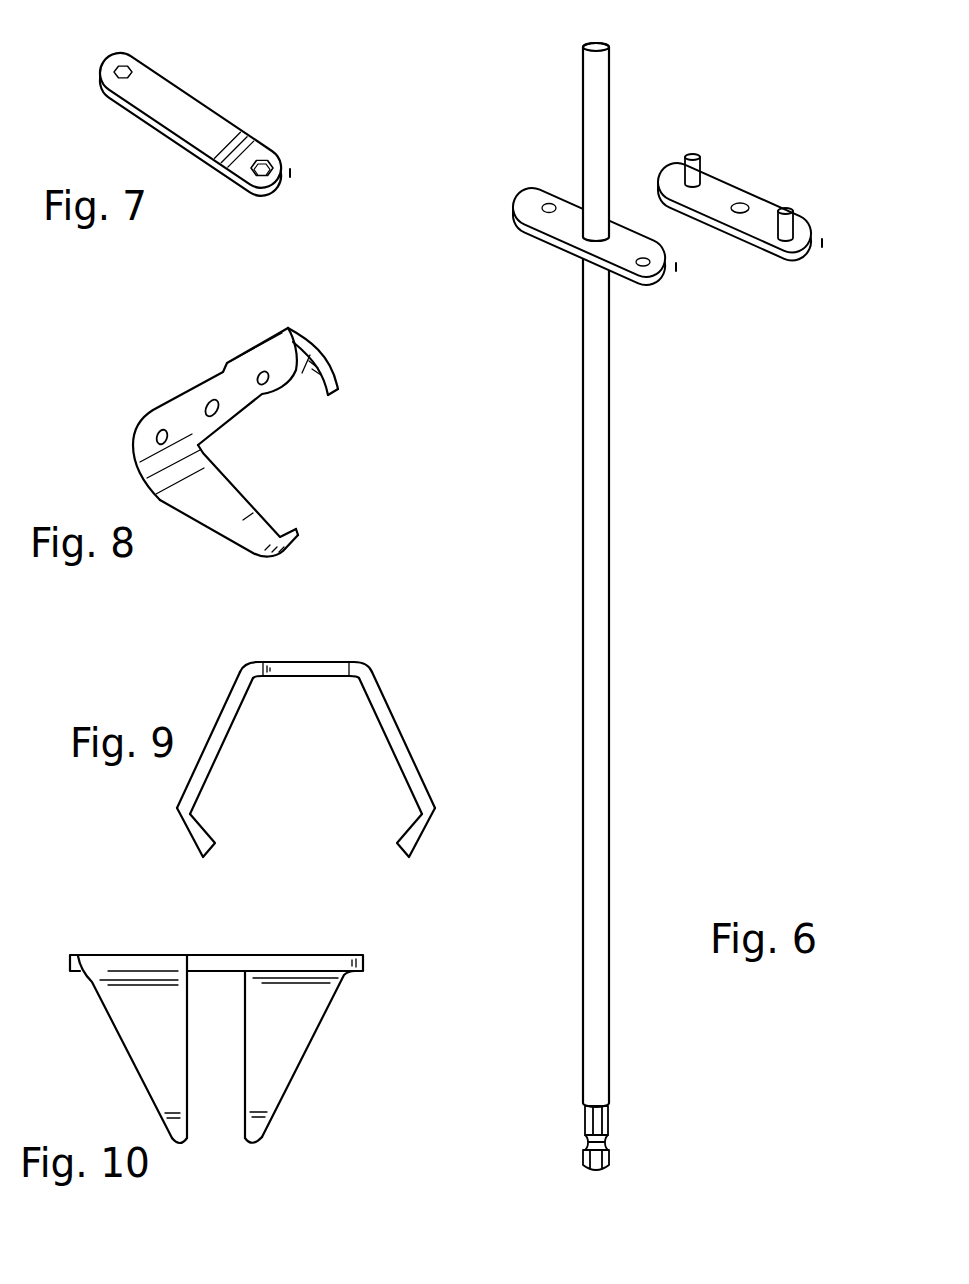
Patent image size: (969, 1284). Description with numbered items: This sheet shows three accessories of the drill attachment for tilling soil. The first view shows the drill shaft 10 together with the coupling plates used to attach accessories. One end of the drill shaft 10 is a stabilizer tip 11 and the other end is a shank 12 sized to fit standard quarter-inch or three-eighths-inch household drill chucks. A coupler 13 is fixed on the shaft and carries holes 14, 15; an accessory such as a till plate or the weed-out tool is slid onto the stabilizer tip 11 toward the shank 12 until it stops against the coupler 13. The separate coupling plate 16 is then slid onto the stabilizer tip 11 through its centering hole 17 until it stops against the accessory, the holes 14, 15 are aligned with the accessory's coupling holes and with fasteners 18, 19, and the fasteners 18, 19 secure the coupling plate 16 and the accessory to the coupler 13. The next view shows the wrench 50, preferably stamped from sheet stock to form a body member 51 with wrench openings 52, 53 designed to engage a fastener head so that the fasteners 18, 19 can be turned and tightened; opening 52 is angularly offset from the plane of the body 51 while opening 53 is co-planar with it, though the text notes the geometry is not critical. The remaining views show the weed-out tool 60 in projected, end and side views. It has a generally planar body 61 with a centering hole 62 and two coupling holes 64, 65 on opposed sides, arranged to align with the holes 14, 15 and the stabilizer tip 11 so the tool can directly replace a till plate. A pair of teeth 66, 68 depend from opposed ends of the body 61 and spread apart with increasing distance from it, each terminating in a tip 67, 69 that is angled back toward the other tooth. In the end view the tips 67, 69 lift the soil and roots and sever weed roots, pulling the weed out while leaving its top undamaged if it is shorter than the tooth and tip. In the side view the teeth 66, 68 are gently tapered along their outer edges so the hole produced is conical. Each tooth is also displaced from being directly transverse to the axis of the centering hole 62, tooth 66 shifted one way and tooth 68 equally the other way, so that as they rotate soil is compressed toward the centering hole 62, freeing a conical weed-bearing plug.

In FIG. 6, the drill shaft 10 is at (614, 437).
In FIG. 6, the stabilizer tip 11 is at (610, 97).
In FIG. 6, the shank 12 is at (608, 1133).
In FIG. 6, the coupler 13 is at (540, 234).
In FIG. 6, the hole 14 is at (545, 204).
In FIG. 6, the hole 15 is at (650, 262).
In FIG. 6, the coupling plate 16 is at (730, 185).
In FIG. 6, the centering hole 17 is at (747, 212).
In FIG. 6, the fastener 18 is at (694, 156).
In FIG. 6, the fastener 19 is at (793, 212).
In FIG. 7, the wrench 50 is at (218, 114).
In FIG. 7, the body member 51 is at (183, 117).
In FIG. 7, the wrench opening 52 is at (273, 160).
In FIG. 7, the wrench opening 53 is at (127, 65).
In FIG. 8, the weed-out tool 60 is at (239, 419).
In FIG. 9, the weed-out tool 60 is at (341, 724).
In FIG. 10, the weed-out tool 60 is at (247, 1023).
In FIG. 8, the generally planar body 61 is at (183, 405).
In FIG. 9, the generally planar body 61 is at (288, 666).
In FIG. 10, the generally planar body 61 is at (238, 954).
In FIG. 8, the centering hole 62 is at (207, 397).
In FIG. 8, the coupling hole 64 is at (155, 438).
In FIG. 8, the coupling hole 65 is at (269, 382).
In FIG. 8, the tooth 66 is at (308, 353).
In FIG. 9, the tooth 66 is at (409, 763).
In FIG. 10, the tooth 66 is at (296, 1060).
In FIG. 8, the tip 67 is at (339, 387).
In FIG. 9, the tip 67 is at (413, 837).
In FIG. 10, the tip 67 is at (258, 1128).
In FIG. 8, the tooth 68 is at (243, 519).
In FIG. 9, the tooth 68 is at (204, 763).
In FIG. 10, the tooth 68 is at (183, 1052).
In FIG. 8, the tip 69 is at (299, 537).
In FIG. 9, the tip 69 is at (209, 843).
In FIG. 10, the tip 69 is at (184, 1132).